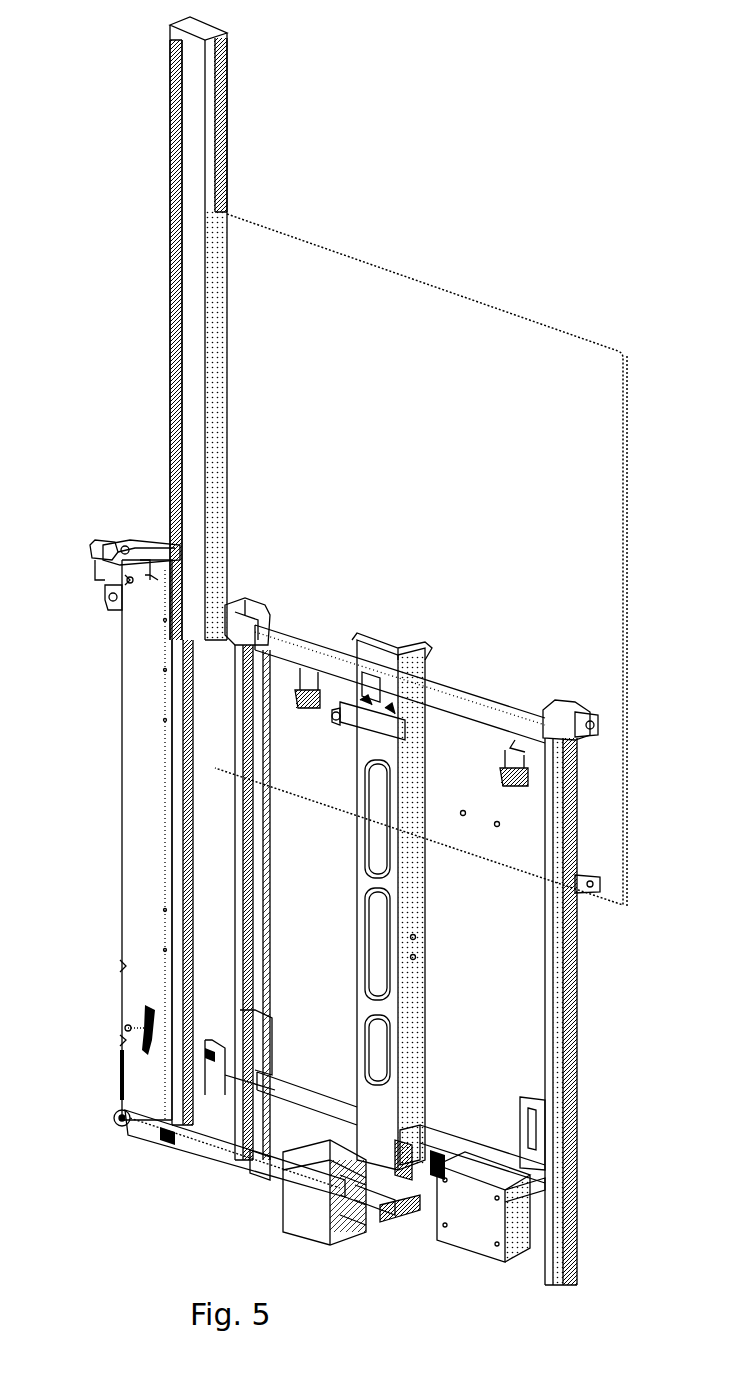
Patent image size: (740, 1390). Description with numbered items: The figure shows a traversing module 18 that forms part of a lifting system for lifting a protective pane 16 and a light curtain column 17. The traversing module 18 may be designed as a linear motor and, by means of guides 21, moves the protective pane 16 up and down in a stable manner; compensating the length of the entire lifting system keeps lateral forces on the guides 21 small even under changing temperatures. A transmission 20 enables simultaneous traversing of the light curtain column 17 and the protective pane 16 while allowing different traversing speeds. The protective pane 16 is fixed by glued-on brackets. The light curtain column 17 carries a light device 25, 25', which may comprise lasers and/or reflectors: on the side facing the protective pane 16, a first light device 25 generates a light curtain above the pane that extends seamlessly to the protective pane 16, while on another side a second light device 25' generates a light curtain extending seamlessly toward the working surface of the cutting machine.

The protective pane 16 is at (430, 482).
The light curtain column 17 is at (192, 103).
The traversing module 18 is at (313, 1210).
The transmission 20 is at (215, 1085).
The guides 21 is at (255, 870).
The first light device 25 is at (256, 125).
The second light device 25' is at (138, 340).